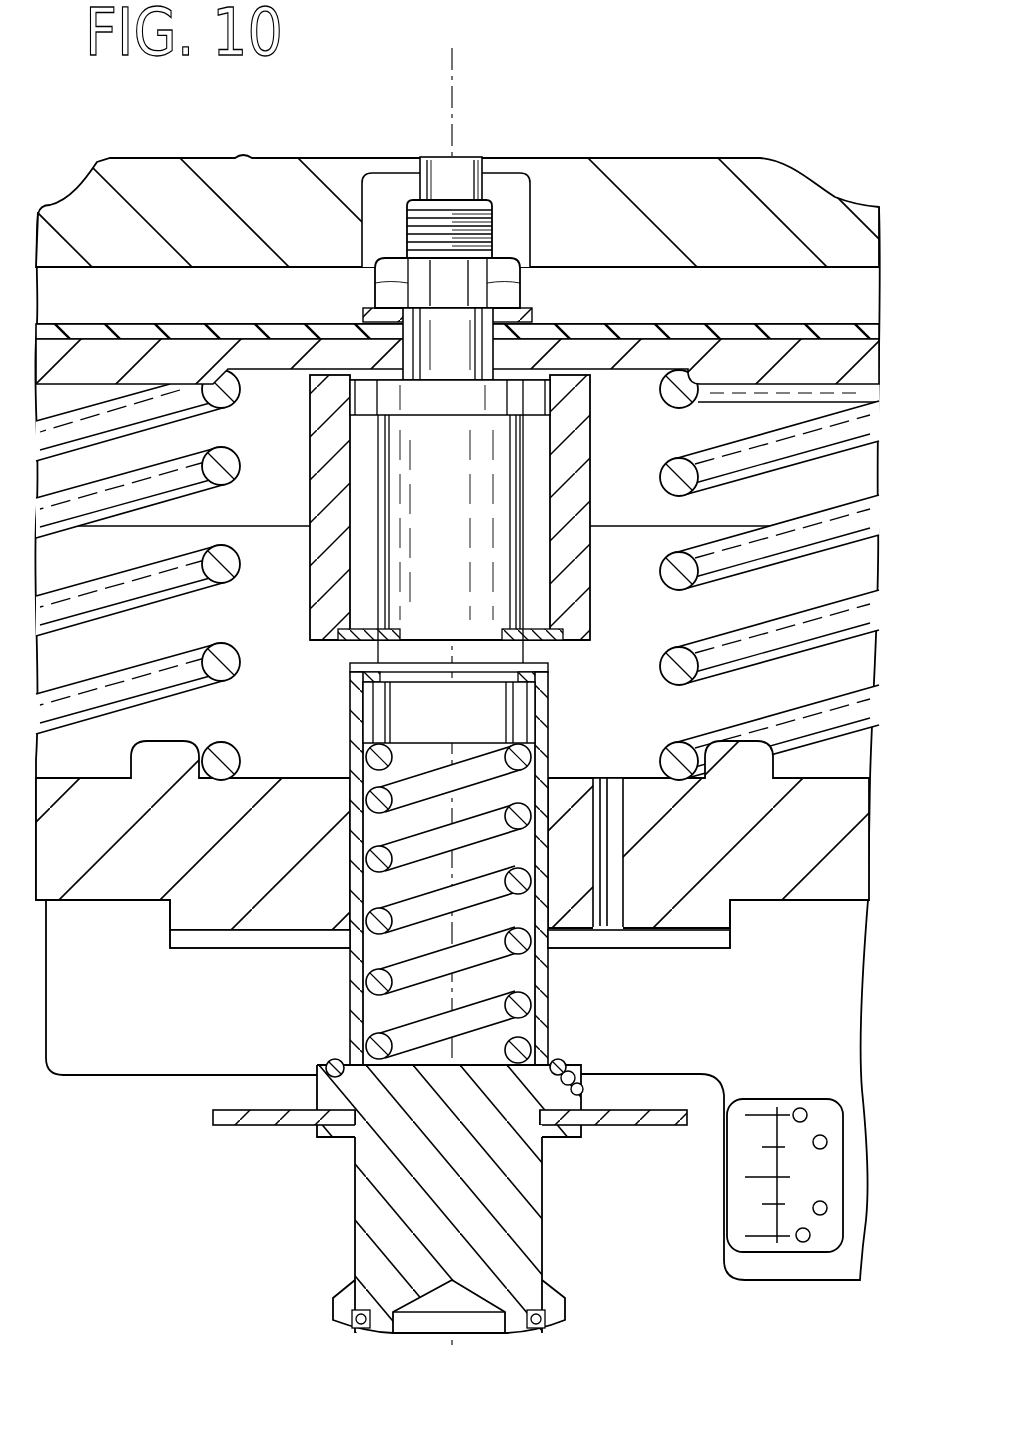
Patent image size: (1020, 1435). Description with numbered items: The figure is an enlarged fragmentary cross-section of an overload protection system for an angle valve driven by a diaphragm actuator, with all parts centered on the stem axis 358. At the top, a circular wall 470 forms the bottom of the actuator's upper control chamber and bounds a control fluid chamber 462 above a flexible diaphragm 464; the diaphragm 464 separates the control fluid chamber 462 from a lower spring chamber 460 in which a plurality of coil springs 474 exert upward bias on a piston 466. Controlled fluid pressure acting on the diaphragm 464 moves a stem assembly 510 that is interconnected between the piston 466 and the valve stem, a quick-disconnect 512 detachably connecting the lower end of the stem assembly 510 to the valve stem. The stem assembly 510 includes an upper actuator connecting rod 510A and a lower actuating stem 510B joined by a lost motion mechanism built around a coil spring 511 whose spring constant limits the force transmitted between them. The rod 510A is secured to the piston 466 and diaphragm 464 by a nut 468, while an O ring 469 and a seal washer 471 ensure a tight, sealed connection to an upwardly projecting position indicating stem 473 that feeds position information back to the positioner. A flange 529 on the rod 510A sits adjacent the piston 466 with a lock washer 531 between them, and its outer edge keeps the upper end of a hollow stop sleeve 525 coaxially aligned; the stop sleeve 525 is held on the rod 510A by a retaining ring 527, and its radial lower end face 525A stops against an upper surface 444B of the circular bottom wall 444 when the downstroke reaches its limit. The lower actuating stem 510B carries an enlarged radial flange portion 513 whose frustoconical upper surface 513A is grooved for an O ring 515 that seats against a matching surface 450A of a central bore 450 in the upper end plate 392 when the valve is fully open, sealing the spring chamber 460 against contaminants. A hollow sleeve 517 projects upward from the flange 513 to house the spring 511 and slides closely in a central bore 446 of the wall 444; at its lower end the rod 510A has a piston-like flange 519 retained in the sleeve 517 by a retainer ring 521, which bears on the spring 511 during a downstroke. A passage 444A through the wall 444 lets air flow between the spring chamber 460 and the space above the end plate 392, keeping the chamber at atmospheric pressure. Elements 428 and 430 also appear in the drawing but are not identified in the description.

The circular wall 470 is at (150, 195).
The position indicating stem 473 is at (465, 178).
The nut 468 is at (497, 275).
The O ring 469 is at (392, 310).
The seal washer 471 is at (527, 322).
The control fluid chamber 462 is at (635, 300).
The flexible diaphragm 464 is at (710, 322).
The piston 466 is at (115, 357).
The lower spring chamber 460 is at (256, 627).
The coil springs 474 is at (262, 450).
The downtravel positive position stop 525 is at (322, 462).
The radial lower end face 525A is at (562, 648).
The flange 529 is at (362, 396).
The lock washer 531 is at (525, 388).
The retaining ring 527 is at (410, 632).
The upper actuator connecting rod 510A is at (490, 527).
The retainer ring 521 is at (354, 670).
The hollow sleeve 517 is at (548, 732).
The piston-like flange 519 is at (393, 716).
The coaxial central bore 446 is at (372, 818).
The central bore 450 is at (348, 962).
The matching surface 450A is at (585, 1092).
The circular bottom wall 444 is at (160, 865).
The passage 444A is at (608, 935).
The upper surface 444B is at (560, 782).
The upper end plate 392 is at (236, 1027).
The coil spring 511 is at (510, 969).
The radial flange portion 513 is at (320, 1092).
The frustoconical upper surface 513A is at (326, 1066).
The O ring 515 is at (566, 1068).
The diaphragm 428 is at (652, 1128).
The connector block 430 is at (740, 1212).
The stem assembly 510 is at (332, 1178).
The lower actuating stem 510B is at (492, 1218).
The quick-disconnect 512 is at (562, 1322).
The stem axis 358 is at (455, 1340).